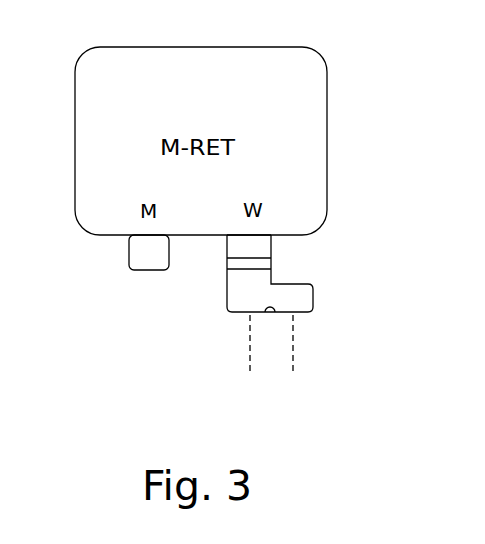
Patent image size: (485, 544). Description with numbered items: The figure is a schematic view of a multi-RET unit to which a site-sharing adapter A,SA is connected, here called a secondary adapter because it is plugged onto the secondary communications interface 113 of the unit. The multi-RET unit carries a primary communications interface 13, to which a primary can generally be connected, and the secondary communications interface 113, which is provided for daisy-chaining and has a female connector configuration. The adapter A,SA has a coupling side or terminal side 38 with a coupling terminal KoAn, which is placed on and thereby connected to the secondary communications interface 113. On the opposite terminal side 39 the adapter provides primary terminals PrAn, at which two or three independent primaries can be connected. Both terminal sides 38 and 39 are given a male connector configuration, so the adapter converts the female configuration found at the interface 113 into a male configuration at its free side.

The primary communications interface 13 is at (142, 255).
The terminal side (coupling side) 38 is at (227, 246).
The terminal side 39 is at (270, 313).
The secondary communications interface 113 is at (252, 247).
The coupling terminal KoAn is at (227, 246).
The primary terminals PrAn is at (237, 315).
The site-sharing adapter / secondary adapter A,SA is at (318, 267).